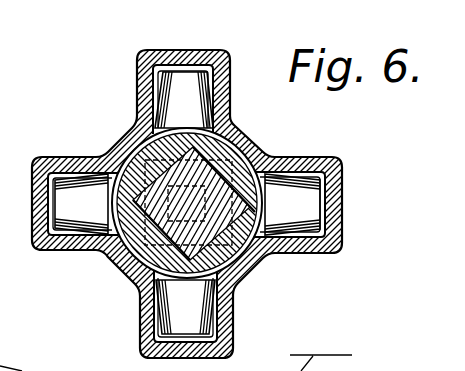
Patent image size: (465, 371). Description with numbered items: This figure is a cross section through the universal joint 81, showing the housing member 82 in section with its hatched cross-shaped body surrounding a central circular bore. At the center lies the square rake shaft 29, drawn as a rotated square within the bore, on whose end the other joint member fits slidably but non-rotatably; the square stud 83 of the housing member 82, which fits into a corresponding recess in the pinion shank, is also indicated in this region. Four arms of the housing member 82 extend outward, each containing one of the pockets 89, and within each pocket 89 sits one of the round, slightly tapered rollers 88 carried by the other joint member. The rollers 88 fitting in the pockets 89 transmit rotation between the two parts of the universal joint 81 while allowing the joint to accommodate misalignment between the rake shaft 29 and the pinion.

The universal joint 81 is at (131, 116).
The housing member 82 is at (295, 250).
The square stud 83 is at (257, 131).
The rake shaft 29 is at (264, 150).
The rollers 88 is at (182, 83).
The pockets 89 is at (152, 82).